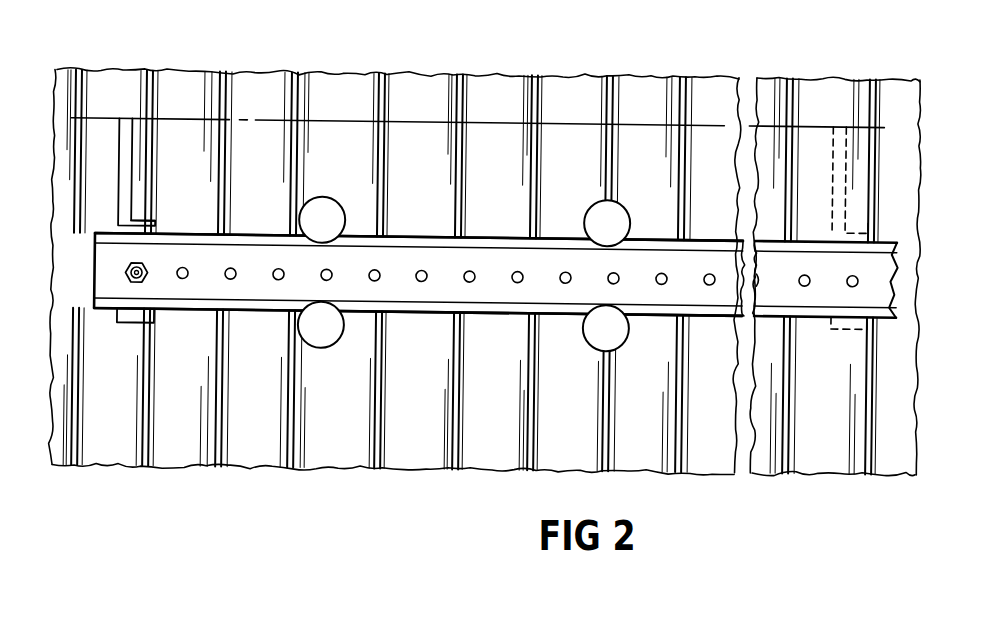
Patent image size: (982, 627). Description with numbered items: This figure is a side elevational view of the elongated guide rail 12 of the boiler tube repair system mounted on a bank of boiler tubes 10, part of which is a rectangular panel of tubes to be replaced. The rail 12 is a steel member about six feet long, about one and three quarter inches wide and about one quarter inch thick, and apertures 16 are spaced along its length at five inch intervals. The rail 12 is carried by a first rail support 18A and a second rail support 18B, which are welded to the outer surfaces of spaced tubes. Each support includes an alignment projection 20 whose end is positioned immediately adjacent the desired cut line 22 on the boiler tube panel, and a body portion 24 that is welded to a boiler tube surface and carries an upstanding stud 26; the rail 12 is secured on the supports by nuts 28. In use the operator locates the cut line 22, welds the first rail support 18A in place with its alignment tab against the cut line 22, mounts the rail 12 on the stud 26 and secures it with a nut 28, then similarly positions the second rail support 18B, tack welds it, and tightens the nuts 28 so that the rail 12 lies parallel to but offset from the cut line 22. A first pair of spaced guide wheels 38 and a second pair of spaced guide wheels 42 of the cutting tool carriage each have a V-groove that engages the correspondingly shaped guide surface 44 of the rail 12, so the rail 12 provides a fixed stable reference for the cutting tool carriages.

The bank of boiler tubes 10 is at (495, 70).
The elongated guide rail 12 is at (897, 246).
The apertures 16 is at (280, 268).
The first rail support 18A is at (131, 324).
The second rail support 18B is at (853, 325).
The alignment projection 20 is at (118, 134).
The cut line 22 is at (194, 116).
The body portion 24 is at (143, 220).
The upstanding stud 26 is at (129, 279).
The nut 28 is at (143, 280).
The first pair of guide wheels 38 is at (342, 214).
The second pair of guide wheels 42 is at (588, 220).
The guide surface 44 is at (204, 238).